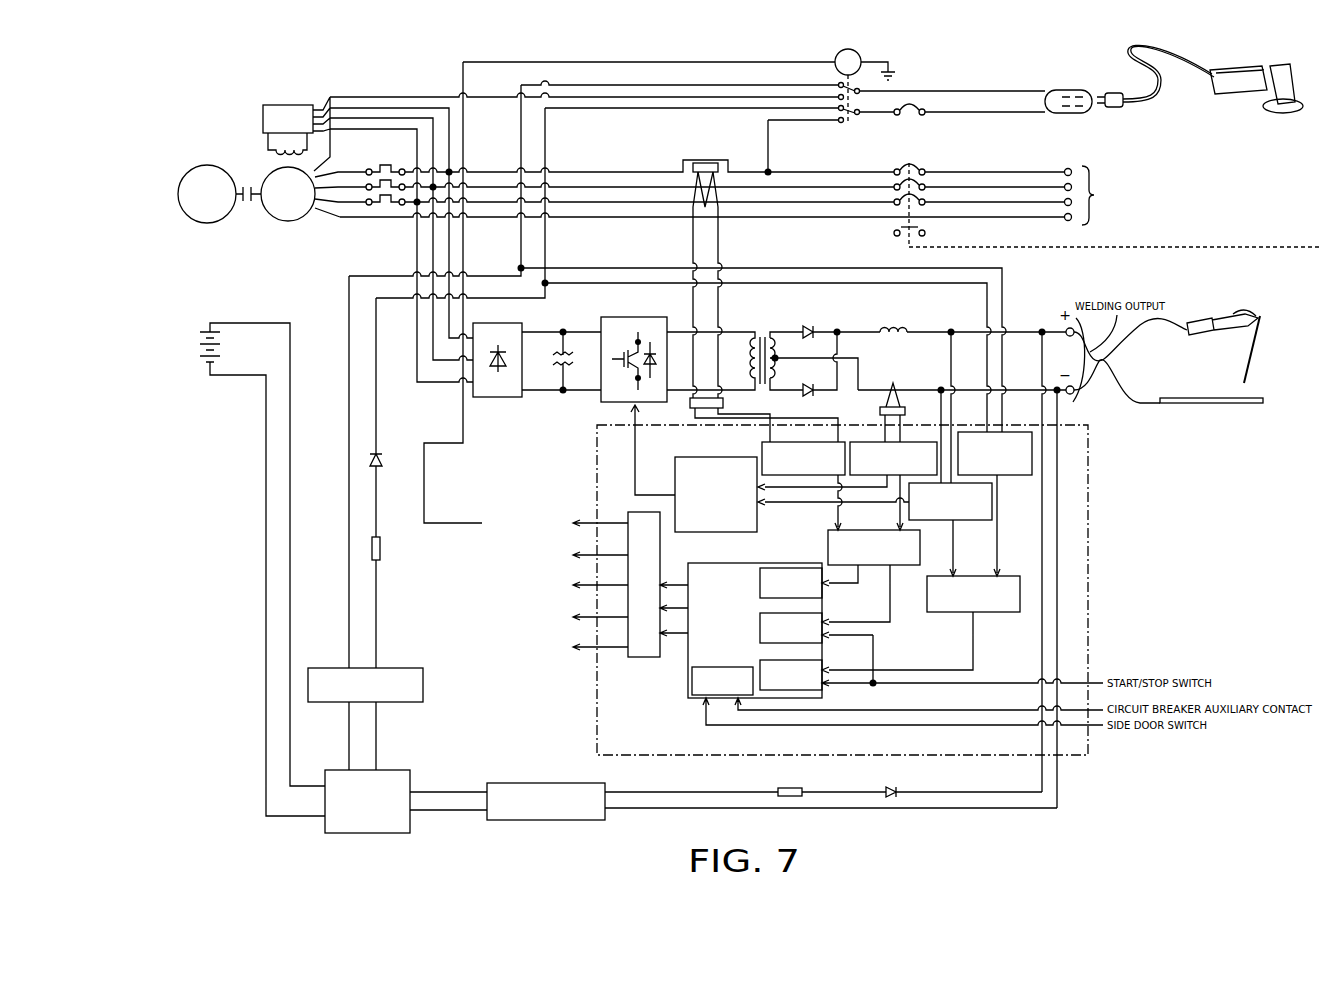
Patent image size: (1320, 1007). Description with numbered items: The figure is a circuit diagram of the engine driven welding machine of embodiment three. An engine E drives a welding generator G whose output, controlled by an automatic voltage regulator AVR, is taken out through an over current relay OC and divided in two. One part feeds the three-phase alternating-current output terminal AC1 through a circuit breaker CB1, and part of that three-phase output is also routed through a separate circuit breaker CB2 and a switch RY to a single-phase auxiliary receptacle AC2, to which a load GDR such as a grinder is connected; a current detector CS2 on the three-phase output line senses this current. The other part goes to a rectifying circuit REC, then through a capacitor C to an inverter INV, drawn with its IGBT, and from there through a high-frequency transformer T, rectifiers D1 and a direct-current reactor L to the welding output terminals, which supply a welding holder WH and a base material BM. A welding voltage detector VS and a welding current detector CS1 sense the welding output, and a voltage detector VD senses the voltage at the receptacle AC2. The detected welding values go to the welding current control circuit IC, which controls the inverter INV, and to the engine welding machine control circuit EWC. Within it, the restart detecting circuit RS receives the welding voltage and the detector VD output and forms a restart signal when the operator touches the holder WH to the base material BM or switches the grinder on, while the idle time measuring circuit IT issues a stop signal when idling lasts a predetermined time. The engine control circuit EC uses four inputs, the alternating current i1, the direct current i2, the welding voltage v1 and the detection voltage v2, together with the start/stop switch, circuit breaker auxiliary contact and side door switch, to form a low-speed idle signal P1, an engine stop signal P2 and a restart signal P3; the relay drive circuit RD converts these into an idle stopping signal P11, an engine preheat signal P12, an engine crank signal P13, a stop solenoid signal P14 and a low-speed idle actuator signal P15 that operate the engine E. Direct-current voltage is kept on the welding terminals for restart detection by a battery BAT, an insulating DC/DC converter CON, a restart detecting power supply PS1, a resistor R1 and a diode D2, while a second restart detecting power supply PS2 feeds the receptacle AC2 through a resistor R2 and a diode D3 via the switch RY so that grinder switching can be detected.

The engine E is at (207, 194).
The welding generator G is at (288, 194).
The automatic voltage regulator AVR is at (288, 130).
The over current relay OC is at (385, 173).
The switch RY is at (679, 86).
The circuit breaker CB1 is at (1106, 196).
The circuit breaker CB2 is at (909, 122).
The three-phase alternating-current output terminal AC1 is at (1166, 200).
The single-phase auxiliary receptacle AC2 is at (1070, 113).
The load GDR is at (1237, 94).
The battery BAT is at (200, 349).
The rectifying circuit REC is at (498, 397).
The inverter INV is at (601, 326).
The capacitor C is at (571, 361).
The IGBT switching element IGBT is at (630, 340).
The high-frequency transformer T is at (762, 335).
The rectifier D1 is at (840, 351).
The direct-current reactor L is at (893, 317).
The welding current sensor CS1 is at (874, 441).
The current detector CS2 is at (763, 452).
The welding current control circuit IC is at (675, 476).
The voltage detector VD is at (1012, 475).
The welding voltage detector VS is at (975, 520).
The idle time measuring circuit IT is at (828, 548).
The engine control circuit EC is at (727, 563).
The relay drive circuit RD is at (644, 657).
The restart detecting circuit RS is at (993, 612).
The restart detecting power supply PS1 is at (545, 782).
The restart detecting power supply PS2 is at (423, 685).
The engine welding machine control circuit EWC is at (597, 702).
The insulating DC/DC converter CON is at (410, 780).
The resistor R1 is at (790, 788).
The resistor R2 is at (390, 602).
The diode D2 is at (898, 787).
The diode D3 is at (390, 417).
The welding holder WH is at (1238, 357).
The base material BM is at (1197, 404).
The idle stopping signal P11 is at (561, 519).
The engine preheat signal P12 is at (555, 551).
The engine crank signal P13 is at (561, 581).
The stop solenoid signal P14 is at (558, 612).
The low-speed idle actuator signal P15 is at (525, 642).
The low-speed idle signal P1 is at (674, 578).
The engine stop signal P2 is at (674, 602).
The restart signal P3 is at (674, 627).
The alternating current i1 is at (838, 520).
The direct current i2 is at (900, 520).
The welding voltage v1 is at (953, 556).
The detection voltage v2 is at (997, 562).